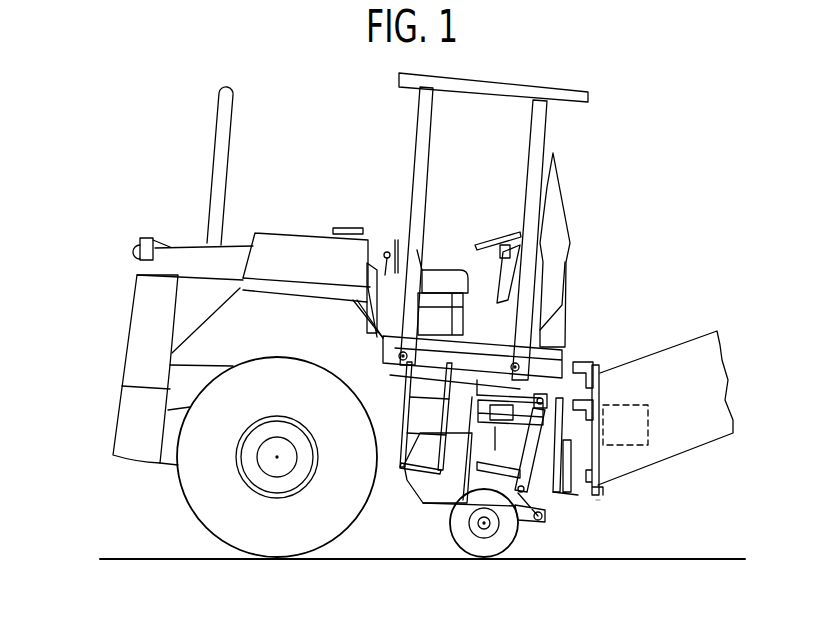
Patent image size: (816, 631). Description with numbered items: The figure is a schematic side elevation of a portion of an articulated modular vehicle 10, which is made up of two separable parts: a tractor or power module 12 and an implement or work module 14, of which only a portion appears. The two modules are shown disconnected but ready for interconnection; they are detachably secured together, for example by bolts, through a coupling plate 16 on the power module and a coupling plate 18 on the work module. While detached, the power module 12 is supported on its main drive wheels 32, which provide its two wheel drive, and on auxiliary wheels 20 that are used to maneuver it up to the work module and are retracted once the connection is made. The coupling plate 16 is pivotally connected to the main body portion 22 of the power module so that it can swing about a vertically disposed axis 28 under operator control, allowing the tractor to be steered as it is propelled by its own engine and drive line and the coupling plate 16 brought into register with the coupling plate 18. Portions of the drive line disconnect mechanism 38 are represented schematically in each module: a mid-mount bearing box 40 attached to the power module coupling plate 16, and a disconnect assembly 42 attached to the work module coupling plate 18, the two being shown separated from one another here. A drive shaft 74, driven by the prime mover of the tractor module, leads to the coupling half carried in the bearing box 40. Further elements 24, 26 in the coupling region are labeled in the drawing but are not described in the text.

The articulated modular vehicle 10 is at (636, 203).
The tractor or power module 12 is at (307, 214).
The implement or work module 14 is at (679, 328).
The power module coupling plate 16 is at (552, 515).
The work module coupling plate 18 is at (600, 486).
The auxiliary wheels 20 is at (460, 529).
The main body portion 22 is at (300, 335).
The vertical mast bar 24 is at (559, 400).
The mounting brackets 26 is at (590, 400).
The vertically disposed axis 28 is at (502, 397).
The main drive wheels 32 is at (202, 505).
The drive line disconnect mechanism 38 is at (596, 507).
The mid-mount bearing box 40 is at (568, 483).
The disconnect assembly 42 is at (638, 416).
The drive shaft 74 is at (482, 462).